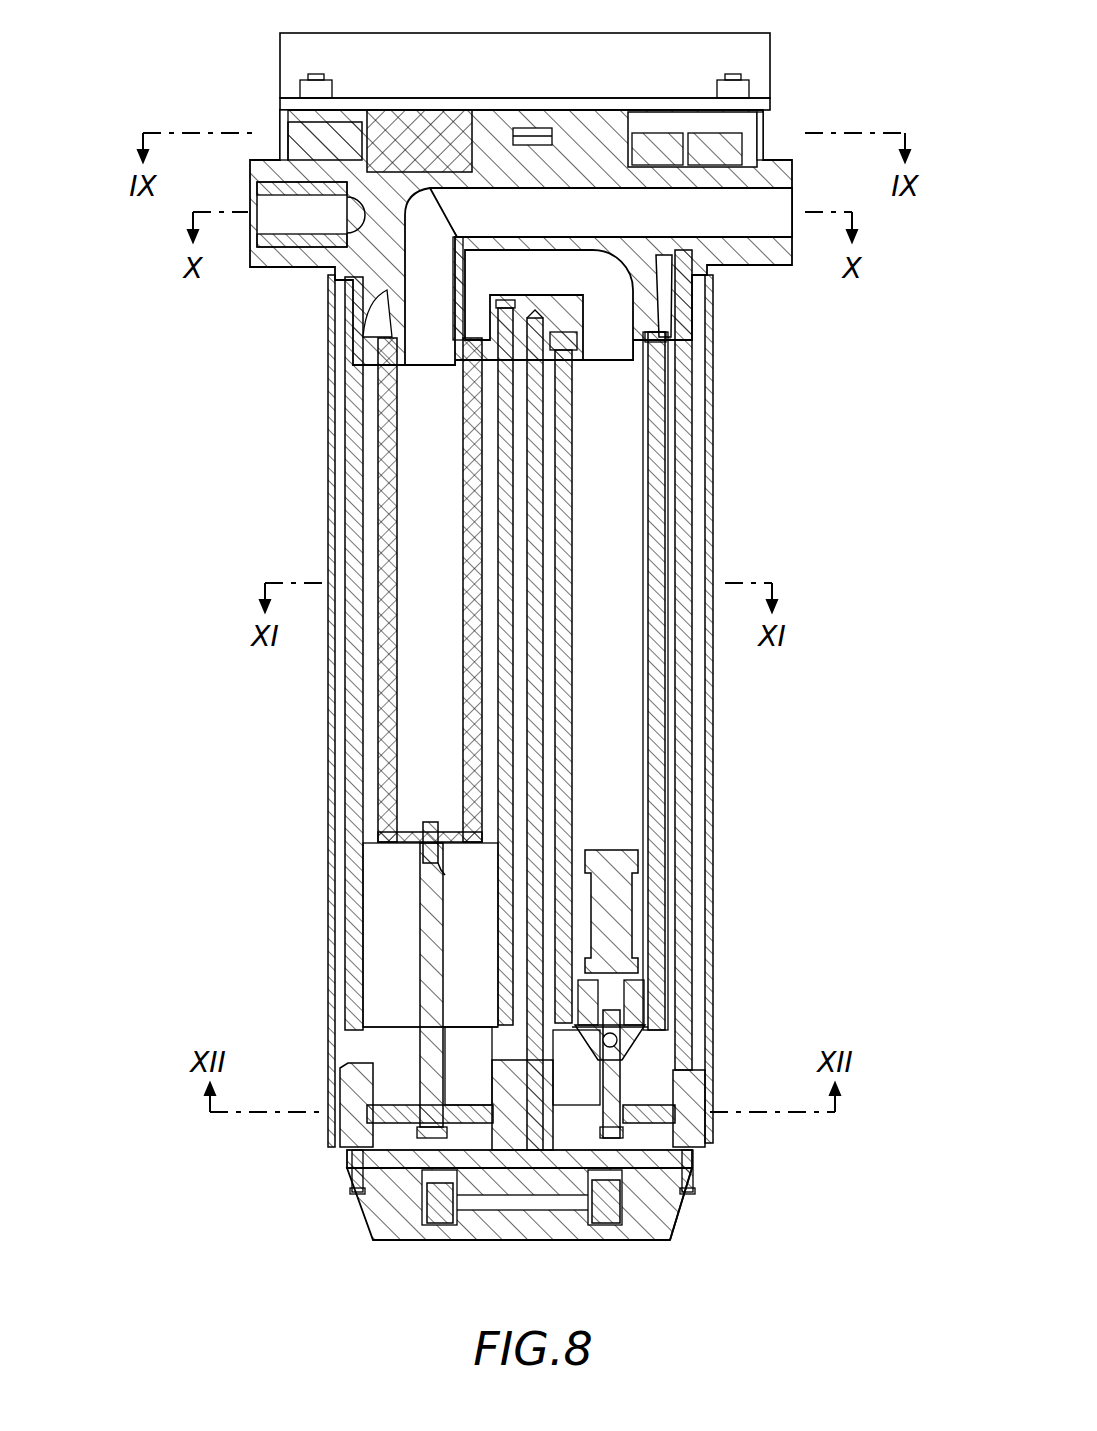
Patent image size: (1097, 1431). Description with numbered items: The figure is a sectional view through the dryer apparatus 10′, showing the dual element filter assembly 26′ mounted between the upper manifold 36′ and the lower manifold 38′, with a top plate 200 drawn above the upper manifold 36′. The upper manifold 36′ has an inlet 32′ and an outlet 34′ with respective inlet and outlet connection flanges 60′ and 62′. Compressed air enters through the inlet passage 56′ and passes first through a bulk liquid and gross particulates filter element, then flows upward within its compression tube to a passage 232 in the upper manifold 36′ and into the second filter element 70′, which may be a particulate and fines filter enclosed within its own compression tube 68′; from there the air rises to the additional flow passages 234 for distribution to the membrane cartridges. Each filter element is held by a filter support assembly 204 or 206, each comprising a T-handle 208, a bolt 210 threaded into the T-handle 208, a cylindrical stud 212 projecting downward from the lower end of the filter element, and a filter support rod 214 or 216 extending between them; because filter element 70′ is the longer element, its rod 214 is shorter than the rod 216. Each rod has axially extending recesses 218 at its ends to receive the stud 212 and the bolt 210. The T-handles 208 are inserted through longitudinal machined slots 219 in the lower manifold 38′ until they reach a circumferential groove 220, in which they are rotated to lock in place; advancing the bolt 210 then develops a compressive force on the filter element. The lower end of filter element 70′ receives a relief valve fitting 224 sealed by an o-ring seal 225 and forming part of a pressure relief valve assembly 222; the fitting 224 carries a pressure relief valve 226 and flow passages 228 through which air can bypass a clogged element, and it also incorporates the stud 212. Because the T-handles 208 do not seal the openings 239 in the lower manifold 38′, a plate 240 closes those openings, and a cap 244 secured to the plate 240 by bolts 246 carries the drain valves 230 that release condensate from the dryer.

The mounting plate 200 is at (590, 42).
The upper manifold 36′ is at (768, 150).
The outlet connection flange 62′ is at (252, 172).
The inlet connection flange 60′ is at (785, 180).
The inlet passage 56′ is at (618, 226).
The outlet 34′ is at (262, 268).
The inlet 32′ is at (765, 262).
The passage 232 is at (522, 284).
The additional flow passages 234 is at (668, 322).
The compression tube 68′ is at (700, 510).
The dryer apparatus 10′ is at (773, 429).
The filter element 70′ is at (648, 630).
The filter assembly 26′ is at (648, 700).
The cylindrical stud 212 is at (431, 822).
The pressure relief valve 226 is at (606, 850).
The recesses 218 is at (440, 870).
The filter support assembly 206 is at (421, 908).
The filter support rod 216 is at (420, 980).
The pressure relief valve assembly 222 is at (640, 982).
The relief valve fitting 224 is at (640, 1000).
The o-ring seal 225 is at (625, 1022).
The filter support assembly 204 is at (655, 1052).
The flow passages 228 is at (573, 1061).
The filter support rod 214 is at (603, 1090).
The longitudinal machined slots 219 is at (478, 1135).
The openings 239 is at (370, 1090).
The T-handle 208 is at (680, 1114).
The lower manifold 38′ is at (695, 1150).
The plate 240 is at (382, 1242).
The cap 244 is at (664, 1232).
The bolts 246 is at (356, 1195).
The bolt 210 is at (428, 1226).
The drain valves 230 is at (448, 1225).
The circumferential groove 220 is at (540, 1235).